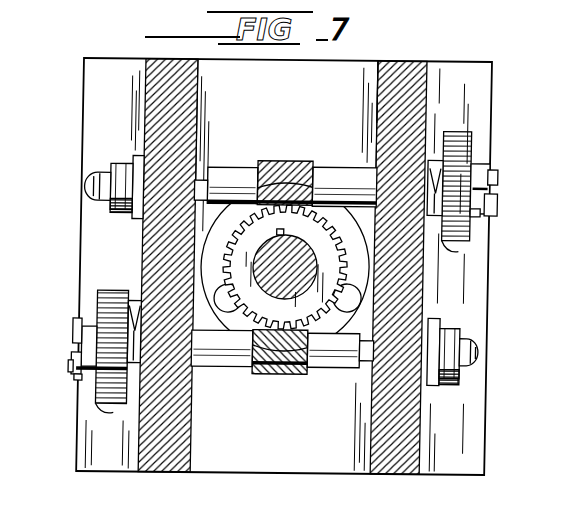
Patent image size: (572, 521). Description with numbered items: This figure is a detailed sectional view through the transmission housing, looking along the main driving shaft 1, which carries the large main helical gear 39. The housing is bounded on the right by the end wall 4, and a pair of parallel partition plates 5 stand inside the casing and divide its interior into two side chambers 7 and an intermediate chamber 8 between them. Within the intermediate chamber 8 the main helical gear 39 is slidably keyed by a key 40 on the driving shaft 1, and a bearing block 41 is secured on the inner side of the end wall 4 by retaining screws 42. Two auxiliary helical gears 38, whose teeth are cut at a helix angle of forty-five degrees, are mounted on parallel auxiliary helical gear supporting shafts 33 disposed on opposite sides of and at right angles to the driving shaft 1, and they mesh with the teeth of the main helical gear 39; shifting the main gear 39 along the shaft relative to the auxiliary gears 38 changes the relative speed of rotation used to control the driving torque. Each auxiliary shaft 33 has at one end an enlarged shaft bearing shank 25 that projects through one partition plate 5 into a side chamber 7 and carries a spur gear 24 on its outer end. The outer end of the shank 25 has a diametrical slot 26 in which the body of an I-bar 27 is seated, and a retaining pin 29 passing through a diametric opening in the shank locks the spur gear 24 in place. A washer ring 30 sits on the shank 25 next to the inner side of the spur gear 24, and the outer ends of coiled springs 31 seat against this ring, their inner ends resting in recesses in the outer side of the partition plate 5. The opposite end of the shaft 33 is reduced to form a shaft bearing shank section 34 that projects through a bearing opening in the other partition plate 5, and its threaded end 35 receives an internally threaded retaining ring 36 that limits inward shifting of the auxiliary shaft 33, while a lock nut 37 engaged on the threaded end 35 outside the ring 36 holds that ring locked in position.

The driving shaft 1 is at (228, 345).
The end wall 4 is at (468, 450).
The partition plate 5 is at (378, 104).
The side chamber 7 is at (435, 462).
The intermediate chamber 8 is at (378, 72).
The spur gear 24 is at (458, 146).
The shaft bearing shank 25 is at (495, 183).
The diametrical slot 26 is at (500, 200).
The I-bar 27 is at (495, 170).
The retaining pin 29 is at (498, 214).
The washer ring 30 is at (462, 240).
The coiled spring 31 is at (433, 160).
The auxiliary helical gear supporting shaft 33 is at (333, 368).
The shaft bearing shank section 34 is at (370, 368).
The threaded end 35 is at (483, 345).
The retaining ring 36 is at (440, 315).
The lock nut 37 is at (462, 372).
The auxiliary helical gear 38 is at (275, 372).
The main helical gear 39 is at (318, 208).
The key 40 is at (281, 230).
The bearing block 41 is at (218, 232).
The retaining screw 42 is at (350, 287).